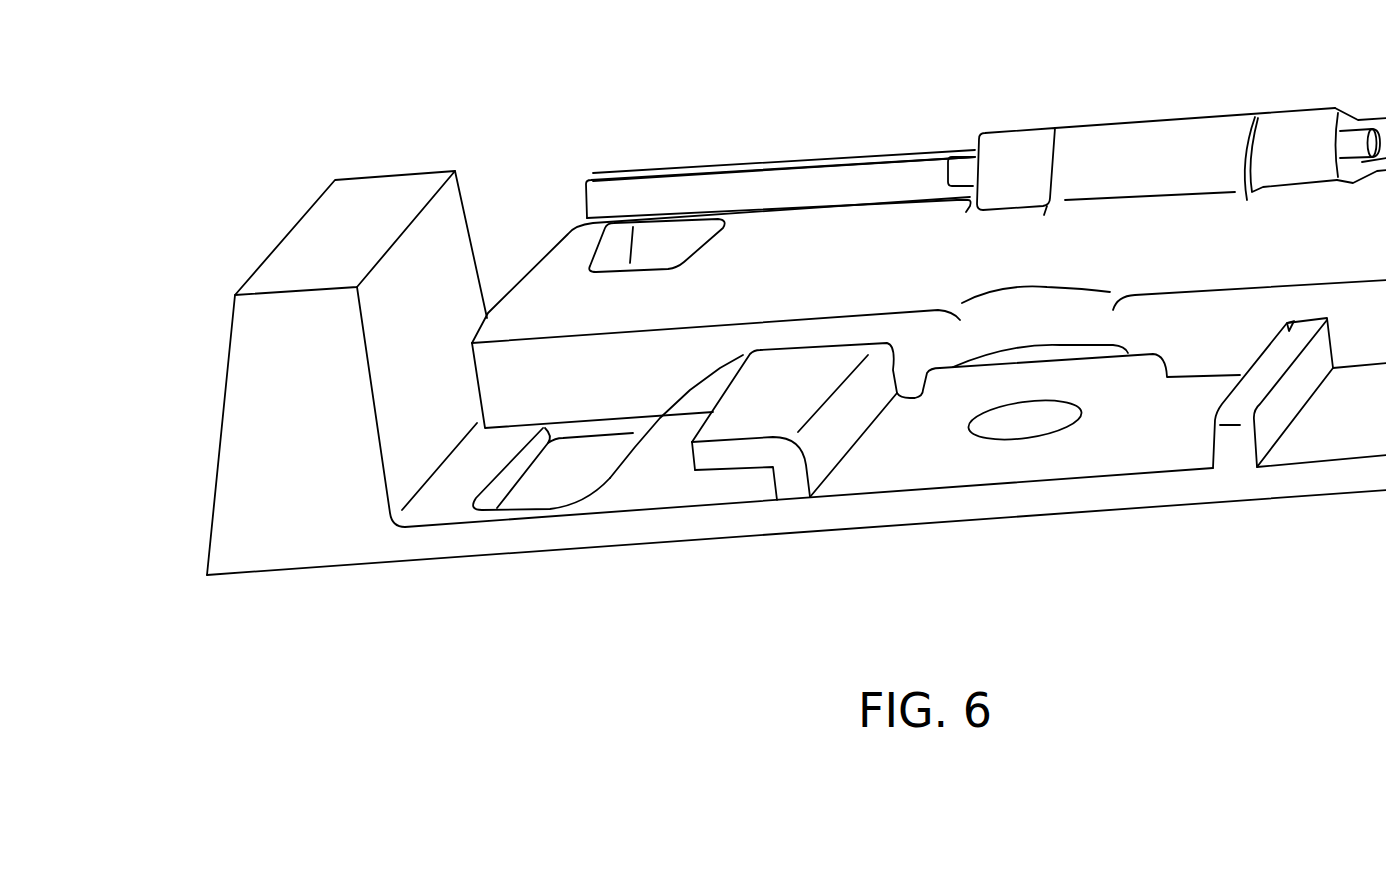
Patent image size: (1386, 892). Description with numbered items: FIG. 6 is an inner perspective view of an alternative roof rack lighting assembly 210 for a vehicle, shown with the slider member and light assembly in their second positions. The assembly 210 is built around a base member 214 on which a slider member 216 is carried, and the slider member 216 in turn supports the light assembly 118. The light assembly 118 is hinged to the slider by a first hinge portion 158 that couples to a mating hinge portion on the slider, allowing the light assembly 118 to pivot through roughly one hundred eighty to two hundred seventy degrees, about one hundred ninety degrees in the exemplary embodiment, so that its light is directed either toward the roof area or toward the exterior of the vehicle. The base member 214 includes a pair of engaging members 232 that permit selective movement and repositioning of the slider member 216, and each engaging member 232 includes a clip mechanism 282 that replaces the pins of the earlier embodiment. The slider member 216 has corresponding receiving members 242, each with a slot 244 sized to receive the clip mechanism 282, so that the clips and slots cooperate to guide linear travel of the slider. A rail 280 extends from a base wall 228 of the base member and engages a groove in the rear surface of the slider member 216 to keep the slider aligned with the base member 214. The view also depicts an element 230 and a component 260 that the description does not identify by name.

The roof rack lighting assembly 210 is at (262, 143).
The base member 214 is at (237, 210).
The side surface of end block 230 is at (225, 400).
The slider member 216 is at (720, 172).
The light assembly 118 is at (832, 150).
The damper cylinder 260 is at (1143, 125).
The first hinge portion 158 is at (1310, 110).
The receiving members 242 is at (553, 469).
The slot 244 is at (676, 416).
The clip mechanism 282 is at (713, 471).
The engaging members 232 is at (763, 562).
The base wall 228 is at (1188, 495).
The rail 280 is at (1233, 503).